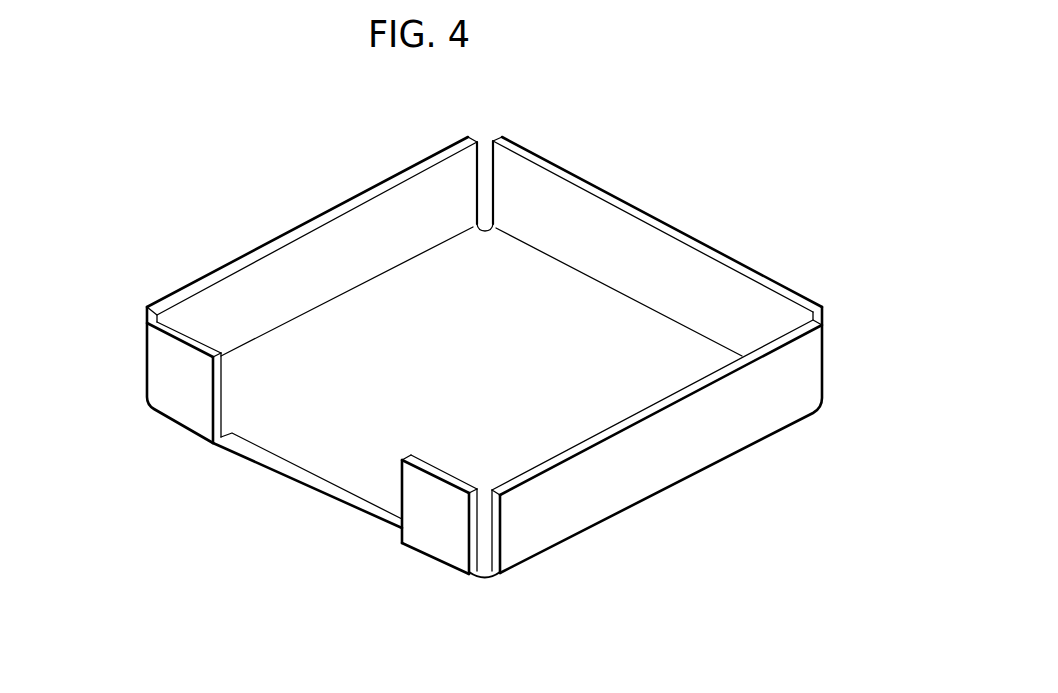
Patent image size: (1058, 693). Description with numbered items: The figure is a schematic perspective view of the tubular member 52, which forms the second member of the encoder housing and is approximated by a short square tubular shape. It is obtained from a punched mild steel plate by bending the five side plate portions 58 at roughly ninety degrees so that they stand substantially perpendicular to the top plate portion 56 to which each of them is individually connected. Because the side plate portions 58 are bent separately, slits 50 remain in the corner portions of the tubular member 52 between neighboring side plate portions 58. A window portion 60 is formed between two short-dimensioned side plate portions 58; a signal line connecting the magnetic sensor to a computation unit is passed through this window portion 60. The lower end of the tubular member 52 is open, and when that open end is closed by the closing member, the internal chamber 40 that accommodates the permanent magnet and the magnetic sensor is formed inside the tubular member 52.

The internal chamber 40 is at (638, 250).
The slit 50 is at (485, 175).
The tubular member 52 is at (210, 149).
The top plate portion 56 is at (285, 433).
The side plate portion 58 is at (378, 253).
The window portion 60 is at (400, 480).